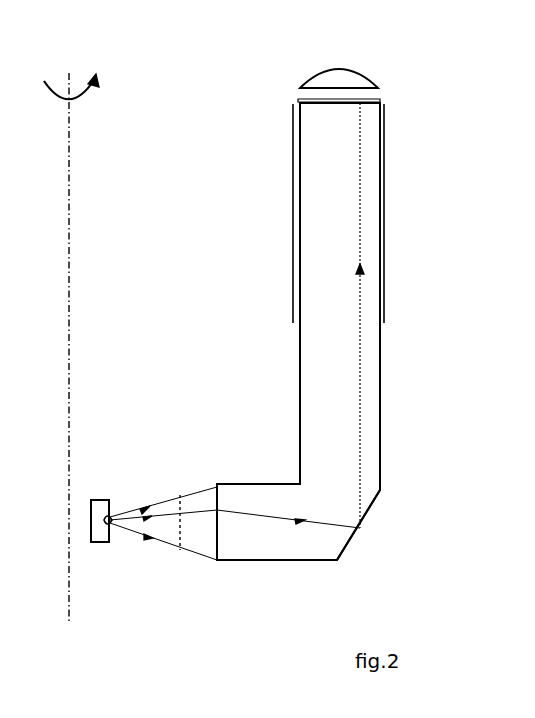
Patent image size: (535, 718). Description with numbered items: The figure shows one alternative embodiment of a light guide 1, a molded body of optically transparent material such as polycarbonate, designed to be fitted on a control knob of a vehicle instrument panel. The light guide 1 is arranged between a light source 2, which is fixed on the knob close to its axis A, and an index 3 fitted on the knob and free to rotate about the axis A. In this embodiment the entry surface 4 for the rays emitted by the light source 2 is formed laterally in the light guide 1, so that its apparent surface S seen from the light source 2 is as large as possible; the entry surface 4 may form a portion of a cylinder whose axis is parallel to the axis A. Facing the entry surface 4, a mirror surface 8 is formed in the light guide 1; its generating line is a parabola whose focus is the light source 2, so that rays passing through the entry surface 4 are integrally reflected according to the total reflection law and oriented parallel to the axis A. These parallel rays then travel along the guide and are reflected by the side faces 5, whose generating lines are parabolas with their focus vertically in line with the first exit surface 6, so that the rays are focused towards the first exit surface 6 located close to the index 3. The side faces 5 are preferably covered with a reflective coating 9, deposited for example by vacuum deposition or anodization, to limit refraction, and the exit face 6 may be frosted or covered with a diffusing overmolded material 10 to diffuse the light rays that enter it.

The light guide 1 is at (402, 332).
The light source 2 is at (108, 500).
The index 3 is at (340, 66).
The entry surface 4 is at (215, 500).
The side faces 5 is at (377, 217).
The first exit surface 6 is at (352, 105).
The mirror surface 8 is at (368, 520).
The reflective coating 9 is at (293, 227).
The diffusing overmolded material 10 is at (368, 99).
The axis A is at (69, 340).
The apparent surface S is at (180, 533).